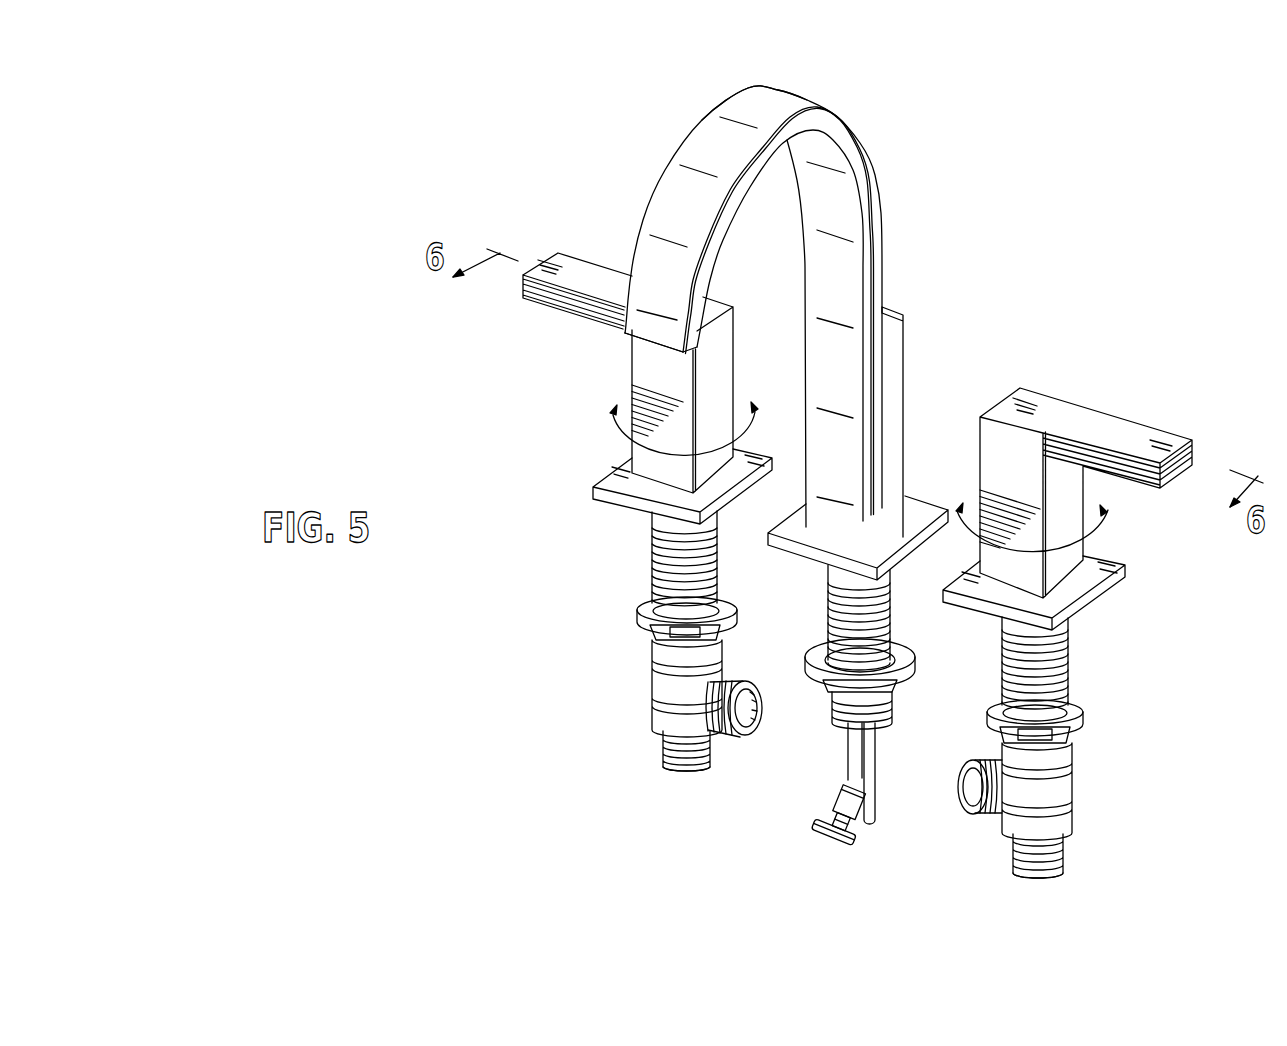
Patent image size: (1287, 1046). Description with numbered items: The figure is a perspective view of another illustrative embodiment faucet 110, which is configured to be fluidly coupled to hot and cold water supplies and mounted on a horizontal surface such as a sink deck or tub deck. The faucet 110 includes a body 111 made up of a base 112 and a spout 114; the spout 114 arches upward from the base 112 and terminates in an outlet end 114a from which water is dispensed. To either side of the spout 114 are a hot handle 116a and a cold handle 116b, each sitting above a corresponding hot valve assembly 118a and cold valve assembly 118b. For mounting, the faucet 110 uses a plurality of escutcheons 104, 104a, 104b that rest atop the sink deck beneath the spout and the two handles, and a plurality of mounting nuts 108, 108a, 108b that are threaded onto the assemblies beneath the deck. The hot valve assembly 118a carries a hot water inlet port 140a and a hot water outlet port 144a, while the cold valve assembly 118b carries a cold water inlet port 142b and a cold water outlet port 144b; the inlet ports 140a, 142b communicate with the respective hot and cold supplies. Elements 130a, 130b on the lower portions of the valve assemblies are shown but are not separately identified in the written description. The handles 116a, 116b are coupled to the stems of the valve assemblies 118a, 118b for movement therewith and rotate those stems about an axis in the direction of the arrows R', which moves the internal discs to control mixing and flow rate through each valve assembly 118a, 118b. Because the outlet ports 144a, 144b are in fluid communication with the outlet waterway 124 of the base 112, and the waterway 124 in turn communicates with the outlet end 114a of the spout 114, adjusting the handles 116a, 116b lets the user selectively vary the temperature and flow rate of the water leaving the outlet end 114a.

The faucet 110 is at (1078, 139).
The body 111 is at (872, 262).
The base 112 is at (868, 380).
The spout 114 is at (707, 127).
The outlet end 114a is at (640, 352).
The escutcheon 104 is at (910, 523).
The escutcheon 104a is at (617, 497).
The escutcheon 104b is at (1083, 603).
The mounting nut 108 is at (817, 650).
The mounting nut 108a is at (637, 600).
The mounting nut 108b is at (1085, 707).
The hot handle 116a is at (720, 373).
The cold handle 116b is at (1078, 482).
The hot valve assembly 118a is at (618, 663).
The cold valve assembly 118b is at (1095, 769).
The outlet waterway 124 is at (858, 763).
The first inlet fitting 130a is at (660, 718).
The second inlet fitting 130b is at (1067, 822).
The hot water inlet port 140a is at (676, 783).
The cold water inlet port 142b is at (1026, 885).
The hot water outlet port 144a is at (765, 732).
The cold water outlet port 144b is at (950, 770).
The arrows R' is at (860, 500).